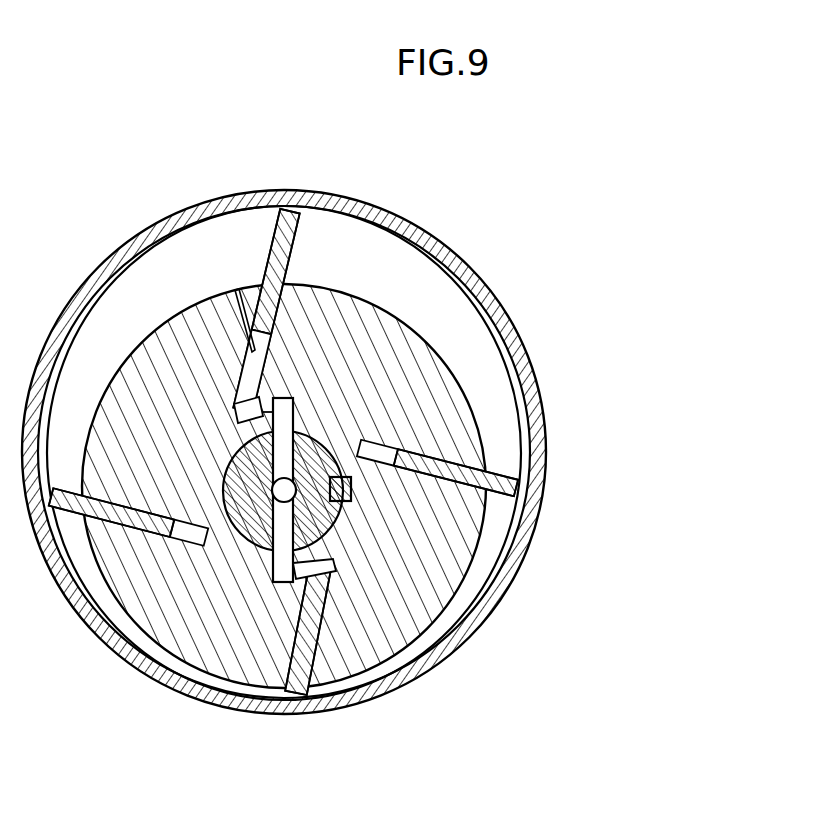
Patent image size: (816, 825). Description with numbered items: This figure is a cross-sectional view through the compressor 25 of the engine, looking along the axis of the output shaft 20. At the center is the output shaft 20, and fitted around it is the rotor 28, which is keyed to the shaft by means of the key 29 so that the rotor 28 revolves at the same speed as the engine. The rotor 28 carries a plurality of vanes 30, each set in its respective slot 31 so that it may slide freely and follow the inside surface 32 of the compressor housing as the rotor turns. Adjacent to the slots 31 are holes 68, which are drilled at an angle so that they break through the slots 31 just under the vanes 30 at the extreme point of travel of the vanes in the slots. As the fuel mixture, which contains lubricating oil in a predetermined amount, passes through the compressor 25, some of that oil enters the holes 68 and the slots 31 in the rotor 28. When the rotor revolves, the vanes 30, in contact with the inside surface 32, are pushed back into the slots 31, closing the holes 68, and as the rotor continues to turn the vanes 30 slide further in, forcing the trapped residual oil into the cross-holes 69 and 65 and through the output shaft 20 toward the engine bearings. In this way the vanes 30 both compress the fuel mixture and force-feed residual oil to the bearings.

The output shaft 20 is at (266, 507).
The compressor 25 is at (430, 676).
The rotor 28 is at (365, 402).
The key 29 is at (352, 493).
The vanes 30 is at (295, 237).
The slots 31 is at (250, 364).
The inside surface 32 is at (431, 255).
The cross-hole 65 is at (284, 584).
The holes 68 is at (238, 291).
The cross-hole 69 is at (252, 421).